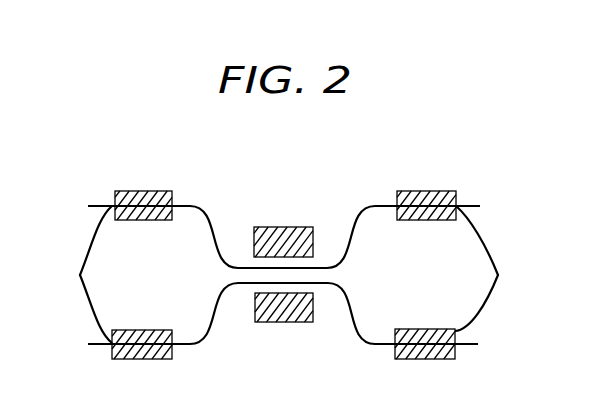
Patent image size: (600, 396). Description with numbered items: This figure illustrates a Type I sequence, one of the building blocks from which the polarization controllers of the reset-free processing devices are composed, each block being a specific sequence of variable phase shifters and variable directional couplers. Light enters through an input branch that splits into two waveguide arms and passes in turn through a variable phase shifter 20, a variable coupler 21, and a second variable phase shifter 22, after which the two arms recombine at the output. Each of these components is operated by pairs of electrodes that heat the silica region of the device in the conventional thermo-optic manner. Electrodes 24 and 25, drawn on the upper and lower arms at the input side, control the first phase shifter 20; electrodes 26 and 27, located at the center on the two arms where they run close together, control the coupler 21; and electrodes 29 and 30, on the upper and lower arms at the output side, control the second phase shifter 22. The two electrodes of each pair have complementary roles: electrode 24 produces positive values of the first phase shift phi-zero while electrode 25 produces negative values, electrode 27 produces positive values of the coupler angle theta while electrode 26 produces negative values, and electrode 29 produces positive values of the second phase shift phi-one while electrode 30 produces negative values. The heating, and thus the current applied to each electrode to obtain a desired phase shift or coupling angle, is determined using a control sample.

The variable phase shifter 20 is at (122, 275).
The variable coupler 21 is at (242, 257).
The second variable phase shifter 22 is at (448, 275).
The electrode 24 is at (158, 191).
The electrode 25 is at (137, 330).
The electrode 26 is at (265, 322).
The electrode 27 is at (305, 227).
The electrode 29 is at (445, 190).
The electrode 30 is at (412, 329).